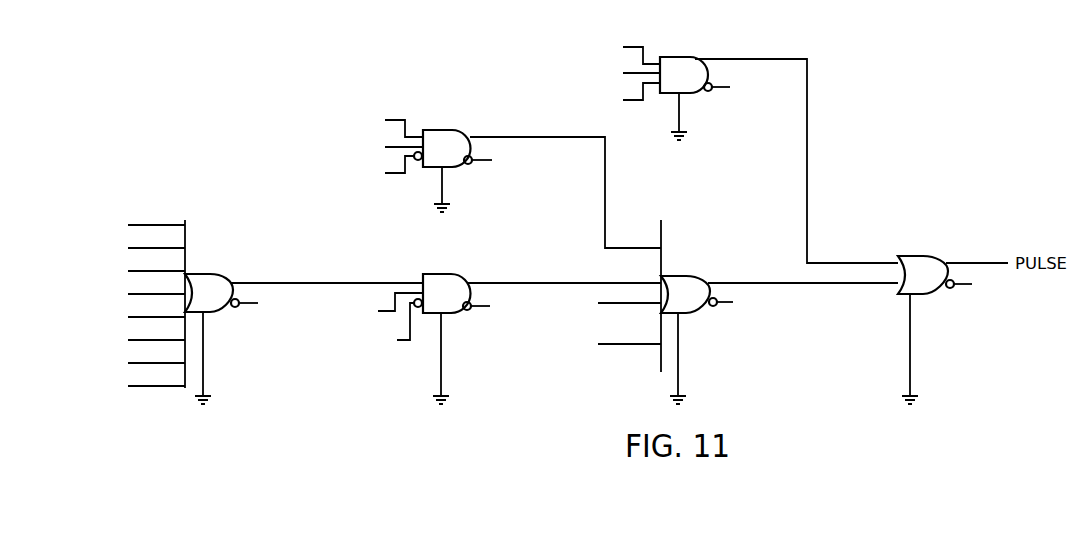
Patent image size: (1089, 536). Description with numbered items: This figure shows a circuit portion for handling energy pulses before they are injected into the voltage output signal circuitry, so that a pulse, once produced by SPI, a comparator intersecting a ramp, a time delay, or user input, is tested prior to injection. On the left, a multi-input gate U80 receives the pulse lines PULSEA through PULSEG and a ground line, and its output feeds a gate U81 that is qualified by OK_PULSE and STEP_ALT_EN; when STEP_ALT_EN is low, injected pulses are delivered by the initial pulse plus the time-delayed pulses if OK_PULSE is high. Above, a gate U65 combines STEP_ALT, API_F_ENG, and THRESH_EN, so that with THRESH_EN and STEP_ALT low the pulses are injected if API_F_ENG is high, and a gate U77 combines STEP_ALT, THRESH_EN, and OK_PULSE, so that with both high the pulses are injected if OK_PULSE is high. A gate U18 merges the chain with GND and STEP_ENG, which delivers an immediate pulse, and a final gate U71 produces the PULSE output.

The NOR gate U80 is at (158, 310).
The NAND gate U81 is at (383, 328).
The NAND gate U65 is at (387, 160).
The NAND gate U77 is at (626, 87).
The NOR gate U18 is at (620, 312).
The NOR gate U71 is at (935, 319).